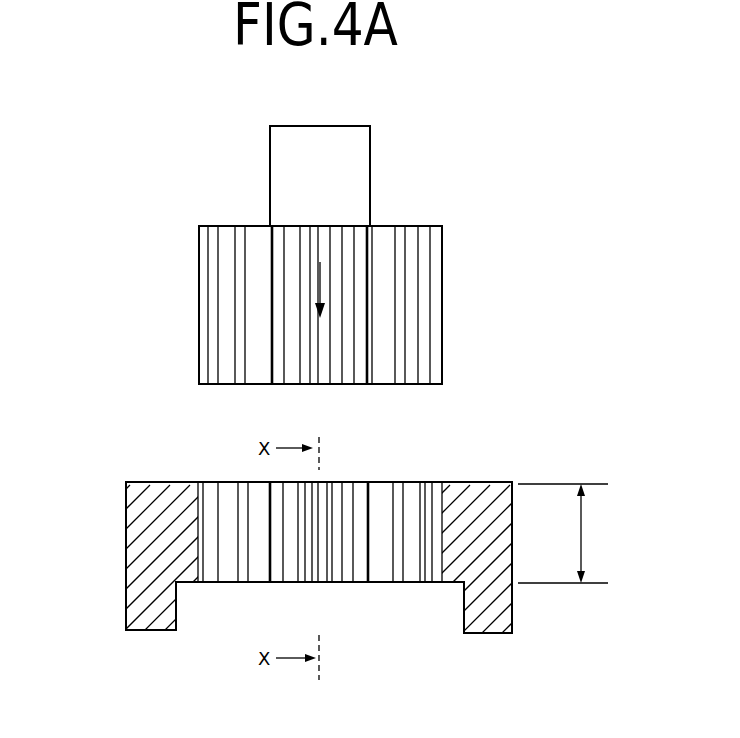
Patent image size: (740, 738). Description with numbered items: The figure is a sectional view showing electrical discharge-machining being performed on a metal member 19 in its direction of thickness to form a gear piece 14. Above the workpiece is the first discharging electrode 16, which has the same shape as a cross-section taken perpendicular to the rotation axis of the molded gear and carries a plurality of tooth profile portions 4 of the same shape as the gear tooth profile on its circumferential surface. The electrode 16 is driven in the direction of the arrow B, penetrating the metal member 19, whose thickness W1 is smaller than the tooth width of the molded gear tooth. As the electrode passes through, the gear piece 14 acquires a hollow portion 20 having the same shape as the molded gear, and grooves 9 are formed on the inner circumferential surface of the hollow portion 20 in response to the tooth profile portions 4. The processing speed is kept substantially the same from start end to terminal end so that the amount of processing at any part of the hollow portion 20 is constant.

The first discharging electrode 16 is at (396, 191).
The arrow B is at (320, 288).
The tooth profile portions 4 is at (318, 340).
The gear piece 14 is at (335, 505).
The hollow portion 20 is at (256, 493).
The metal member 19 is at (125, 530).
The grooves 9 is at (363, 572).
The thickness W1 is at (567, 533).